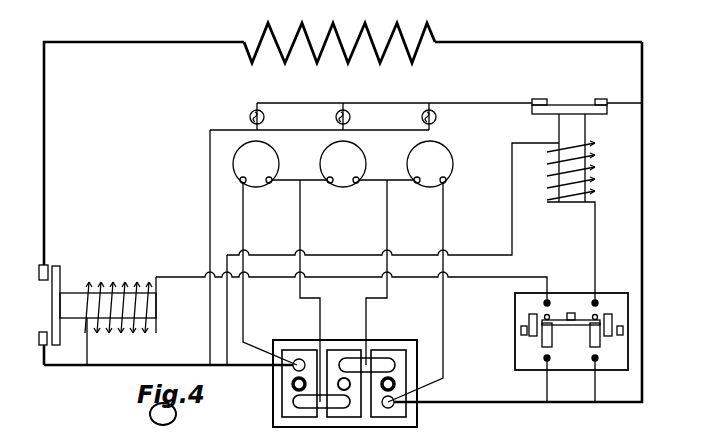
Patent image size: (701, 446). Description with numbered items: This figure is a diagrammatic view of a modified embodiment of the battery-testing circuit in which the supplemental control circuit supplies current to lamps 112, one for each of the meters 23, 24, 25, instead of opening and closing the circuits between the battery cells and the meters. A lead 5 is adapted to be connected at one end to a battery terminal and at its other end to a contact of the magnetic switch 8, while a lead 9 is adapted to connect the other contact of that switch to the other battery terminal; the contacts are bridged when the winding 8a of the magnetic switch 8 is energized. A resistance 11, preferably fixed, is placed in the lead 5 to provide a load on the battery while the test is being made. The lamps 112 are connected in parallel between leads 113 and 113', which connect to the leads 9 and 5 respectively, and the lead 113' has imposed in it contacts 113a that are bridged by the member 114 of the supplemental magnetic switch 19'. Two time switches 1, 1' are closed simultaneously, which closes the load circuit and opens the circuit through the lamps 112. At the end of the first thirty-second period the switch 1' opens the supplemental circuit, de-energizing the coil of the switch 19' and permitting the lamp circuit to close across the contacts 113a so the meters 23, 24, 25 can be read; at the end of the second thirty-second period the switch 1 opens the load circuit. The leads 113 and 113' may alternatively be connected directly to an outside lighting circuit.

The time switch 1 is at (561, 347).
The time switch 1' is at (583, 352).
The lead 5 is at (643, 187).
The magnetic switch 8 is at (104, 315).
The winding 8a is at (114, 283).
The lead 9 is at (118, 367).
The resistance 11 is at (262, 36).
The supplemental magnetic switch 19' is at (585, 208).
The meter 23 is at (245, 150).
The meter 24 is at (322, 152).
The meter 25 is at (410, 151).
The lamp 112 is at (249, 115).
The lead 113 is at (189, 247).
The lead 113' is at (394, 94).
The contacts 113a is at (543, 99).
The bridging member 114 is at (588, 95).